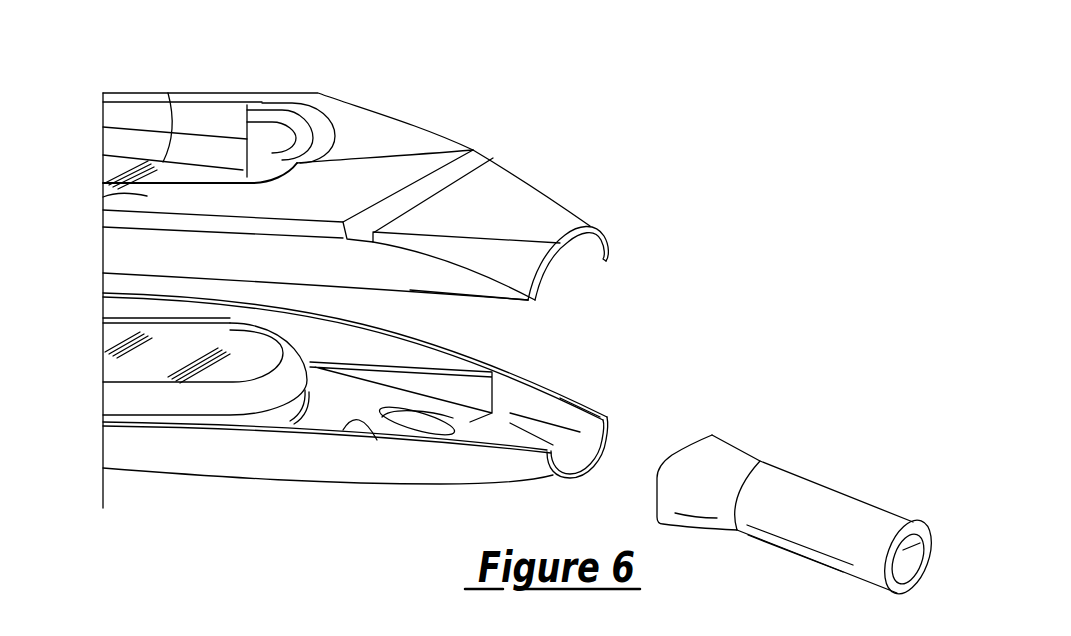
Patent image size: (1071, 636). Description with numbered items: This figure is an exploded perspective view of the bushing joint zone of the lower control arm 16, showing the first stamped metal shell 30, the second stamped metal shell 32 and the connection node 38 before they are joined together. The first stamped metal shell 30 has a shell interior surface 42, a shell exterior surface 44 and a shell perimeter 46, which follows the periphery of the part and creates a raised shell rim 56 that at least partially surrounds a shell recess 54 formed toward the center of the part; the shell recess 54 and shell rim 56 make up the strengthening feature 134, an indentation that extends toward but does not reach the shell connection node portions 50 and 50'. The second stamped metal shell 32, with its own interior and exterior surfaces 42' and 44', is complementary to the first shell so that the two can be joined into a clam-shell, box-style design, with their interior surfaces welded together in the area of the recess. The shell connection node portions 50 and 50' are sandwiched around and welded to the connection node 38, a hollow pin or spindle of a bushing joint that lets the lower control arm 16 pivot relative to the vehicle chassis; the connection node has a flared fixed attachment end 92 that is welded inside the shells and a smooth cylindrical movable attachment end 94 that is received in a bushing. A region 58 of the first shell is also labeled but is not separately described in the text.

The lower control arm 16 is at (508, 123).
The first stamped metal shell 30 is at (373, 132).
The second stamped metal shell 32 is at (377, 440).
The connection node 38 is at (756, 412).
The shell interior surface 42 is at (570, 274).
The shell interior surface 42' is at (597, 388).
The shell exterior surface 44 is at (580, 240).
The shell exterior surface 44' is at (560, 472).
The shell perimeter 46 is at (450, 279).
The shell connection node portion 50 is at (420, 294).
The shell connection node portion 50' is at (355, 439).
The shell recess 54 is at (168, 93).
The shell rim 56 is at (115, 196).
The rib 58 is at (490, 193).
The fixed attachment end 92 is at (730, 457).
The movable attachment end 94 is at (850, 505).
The strengthening feature 134 is at (240, 115).